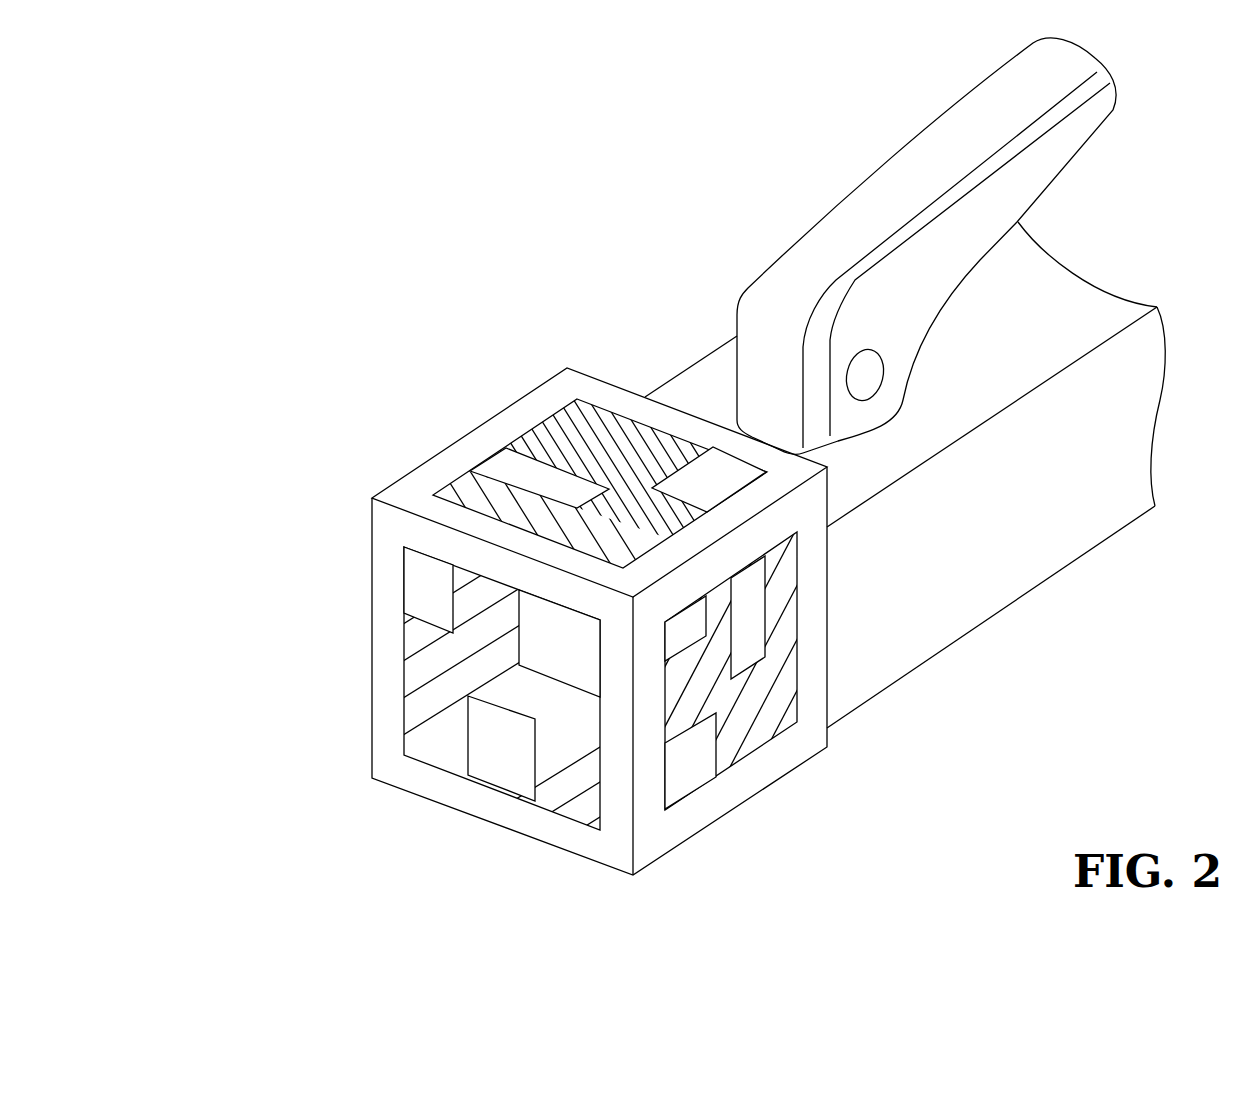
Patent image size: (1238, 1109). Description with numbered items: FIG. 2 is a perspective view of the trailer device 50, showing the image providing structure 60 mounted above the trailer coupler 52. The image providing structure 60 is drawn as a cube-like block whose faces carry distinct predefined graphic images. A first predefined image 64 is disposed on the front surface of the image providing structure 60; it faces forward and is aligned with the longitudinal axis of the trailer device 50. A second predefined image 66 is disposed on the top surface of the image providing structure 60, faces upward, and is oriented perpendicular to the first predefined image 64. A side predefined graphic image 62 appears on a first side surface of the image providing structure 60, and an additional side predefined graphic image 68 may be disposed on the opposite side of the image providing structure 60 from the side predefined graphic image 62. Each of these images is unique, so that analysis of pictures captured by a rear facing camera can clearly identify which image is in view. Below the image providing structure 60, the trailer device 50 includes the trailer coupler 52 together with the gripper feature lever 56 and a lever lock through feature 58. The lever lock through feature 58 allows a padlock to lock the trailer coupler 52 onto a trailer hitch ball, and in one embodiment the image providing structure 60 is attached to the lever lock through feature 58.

The trailer device 50 is at (893, 660).
The trailer coupler 52 is at (592, 485).
The gripper feature lever 56 is at (925, 333).
The lever lock through feature 58 is at (860, 389).
The image providing structure 60 is at (412, 495).
The side predefined graphic image 62 is at (734, 729).
The first predefined image 64 is at (448, 756).
The second predefined image 66 is at (617, 425).
The additional side predefined graphic image 68 is at (317, 640).